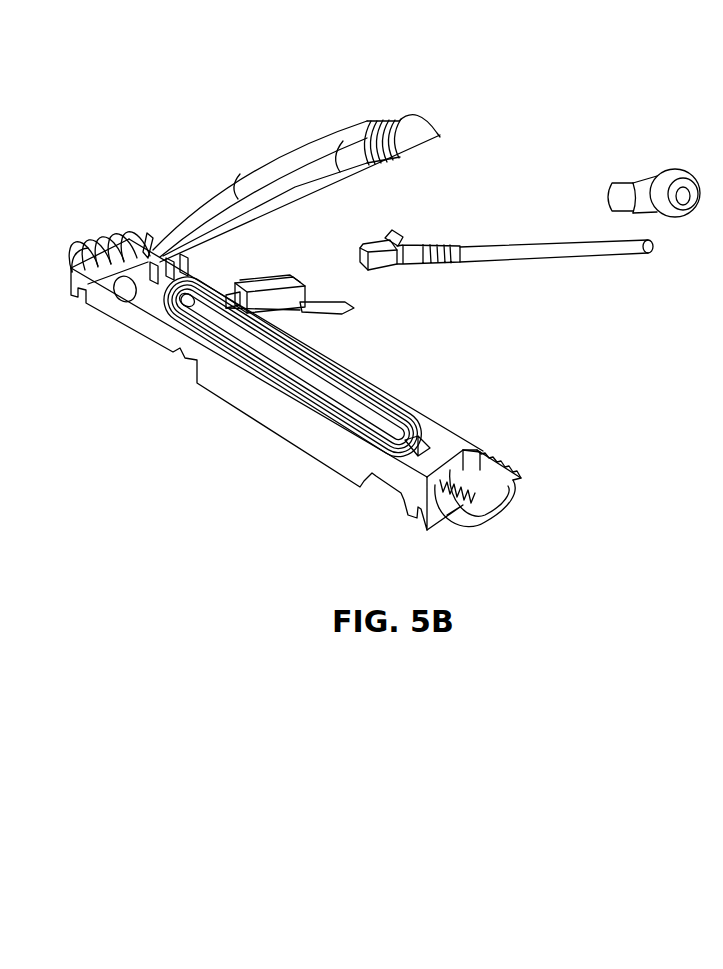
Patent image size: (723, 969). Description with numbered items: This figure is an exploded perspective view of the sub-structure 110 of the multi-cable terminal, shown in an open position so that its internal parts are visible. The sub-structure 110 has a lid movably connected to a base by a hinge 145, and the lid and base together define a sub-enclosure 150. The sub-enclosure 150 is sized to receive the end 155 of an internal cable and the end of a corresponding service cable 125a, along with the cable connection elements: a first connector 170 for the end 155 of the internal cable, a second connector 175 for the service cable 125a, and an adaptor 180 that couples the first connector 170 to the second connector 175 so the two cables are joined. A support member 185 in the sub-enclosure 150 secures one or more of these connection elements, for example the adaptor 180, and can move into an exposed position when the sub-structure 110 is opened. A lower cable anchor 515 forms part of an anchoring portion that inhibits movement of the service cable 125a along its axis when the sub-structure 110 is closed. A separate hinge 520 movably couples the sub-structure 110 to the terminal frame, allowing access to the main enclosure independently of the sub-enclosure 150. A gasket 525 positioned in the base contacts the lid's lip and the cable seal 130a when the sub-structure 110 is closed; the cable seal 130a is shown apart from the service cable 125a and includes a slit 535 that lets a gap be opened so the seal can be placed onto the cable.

The sub-structure 110 is at (138, 224).
The hinge 520 is at (105, 252).
The hinge 145 is at (130, 300).
The sub-enclosure 150 is at (355, 402).
The end of internal cable 155 is at (192, 306).
The first connector 170 is at (232, 286).
The support member 185 is at (350, 305).
The adaptor 180 is at (246, 316).
The lower cable anchor 515 is at (425, 445).
The gasket 525 is at (466, 452).
The second connector 175 is at (372, 266).
The service cable 125a is at (612, 262).
The cable seal 130a is at (670, 215).
The slit 535 is at (680, 178).